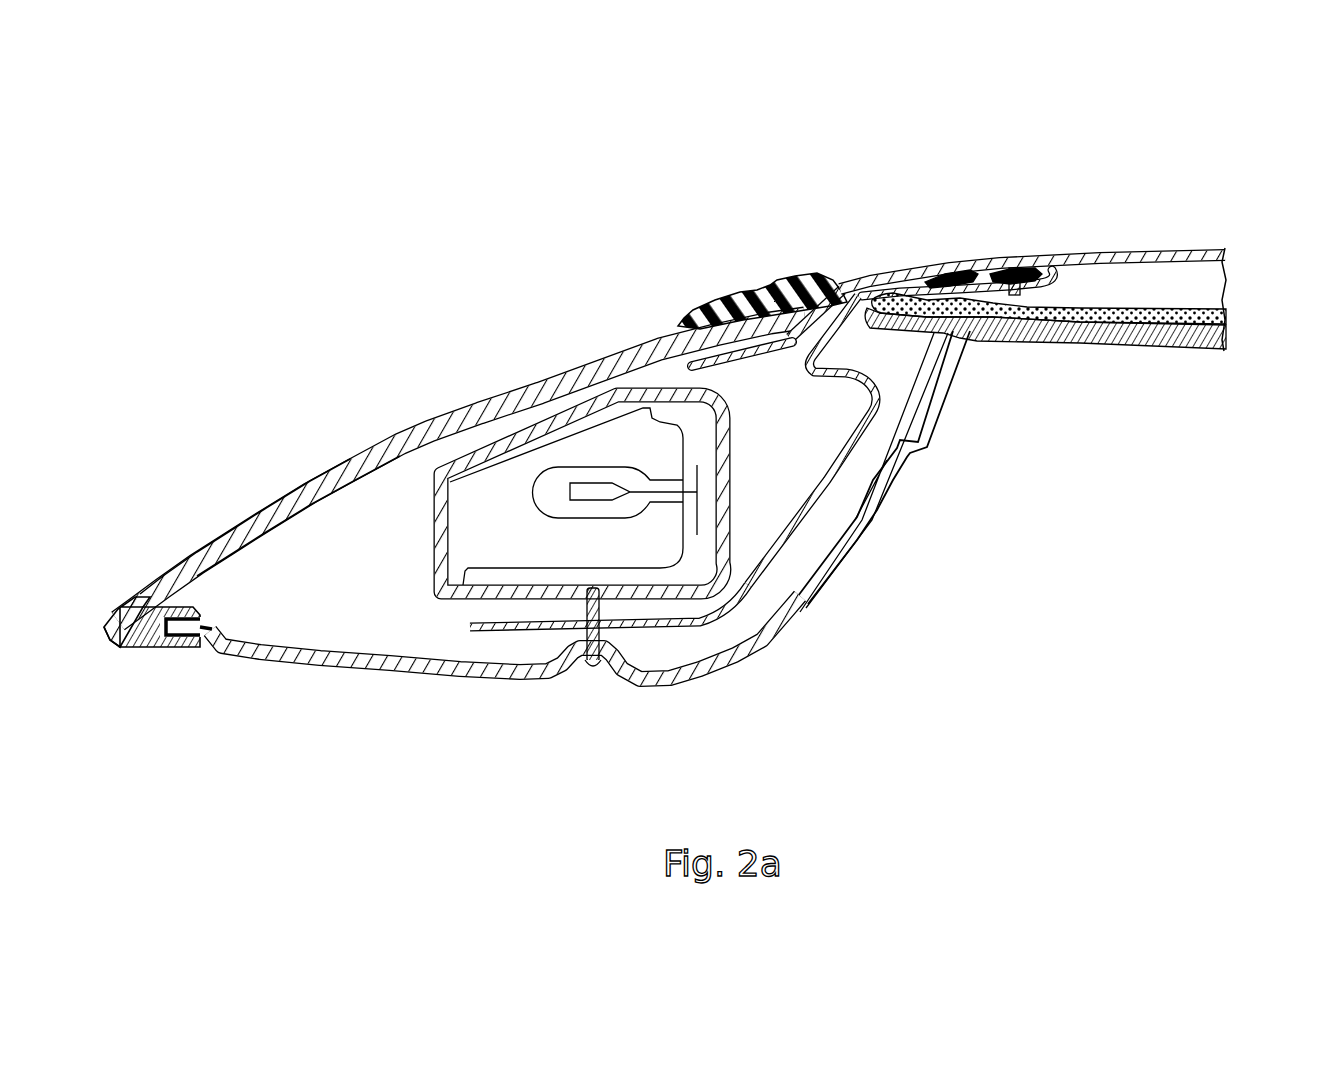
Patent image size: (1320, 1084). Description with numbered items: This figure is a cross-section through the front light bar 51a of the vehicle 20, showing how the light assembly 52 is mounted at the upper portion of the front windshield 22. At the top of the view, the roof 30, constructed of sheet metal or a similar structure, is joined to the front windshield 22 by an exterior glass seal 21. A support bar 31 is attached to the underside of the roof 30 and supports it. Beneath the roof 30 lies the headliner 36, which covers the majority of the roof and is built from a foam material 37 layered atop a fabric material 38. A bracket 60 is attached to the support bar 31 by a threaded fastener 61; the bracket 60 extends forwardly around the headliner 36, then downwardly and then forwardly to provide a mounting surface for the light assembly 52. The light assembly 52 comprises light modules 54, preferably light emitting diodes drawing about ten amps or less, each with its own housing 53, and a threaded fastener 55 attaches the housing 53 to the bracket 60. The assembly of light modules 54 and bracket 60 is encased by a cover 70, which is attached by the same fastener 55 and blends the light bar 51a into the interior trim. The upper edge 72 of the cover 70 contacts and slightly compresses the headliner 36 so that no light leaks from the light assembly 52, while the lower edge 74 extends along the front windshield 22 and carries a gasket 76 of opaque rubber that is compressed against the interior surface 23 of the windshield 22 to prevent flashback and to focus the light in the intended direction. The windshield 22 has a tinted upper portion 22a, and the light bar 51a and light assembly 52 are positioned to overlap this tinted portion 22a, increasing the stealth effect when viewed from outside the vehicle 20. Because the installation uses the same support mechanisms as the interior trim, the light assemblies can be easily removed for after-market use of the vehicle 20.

The vehicle 20 is at (862, 212).
The exterior glass seal 21 is at (736, 290).
The front windshield 22 is at (468, 404).
The upper portion of the front windshield 22a is at (313, 482).
The interior surface of the front windshield 23 is at (297, 513).
The roof 30 is at (1132, 249).
The support bar 31 is at (1018, 262).
The headliner 36 is at (1076, 344).
The foam material 37 is at (1232, 300).
The fabric material 38 is at (1232, 333).
The light bar 51a is at (940, 727).
The light assembly 52 is at (745, 533).
The housing 53 is at (733, 442).
The light module 54 is at (610, 447).
The threaded fastener 55 is at (600, 668).
The bracket 60 is at (880, 408).
The threaded fastener 61 is at (985, 280).
The cover 70 is at (518, 688).
The upper edge 72 is at (968, 343).
The lower edge 74 is at (200, 622).
The gasket 76 is at (147, 648).